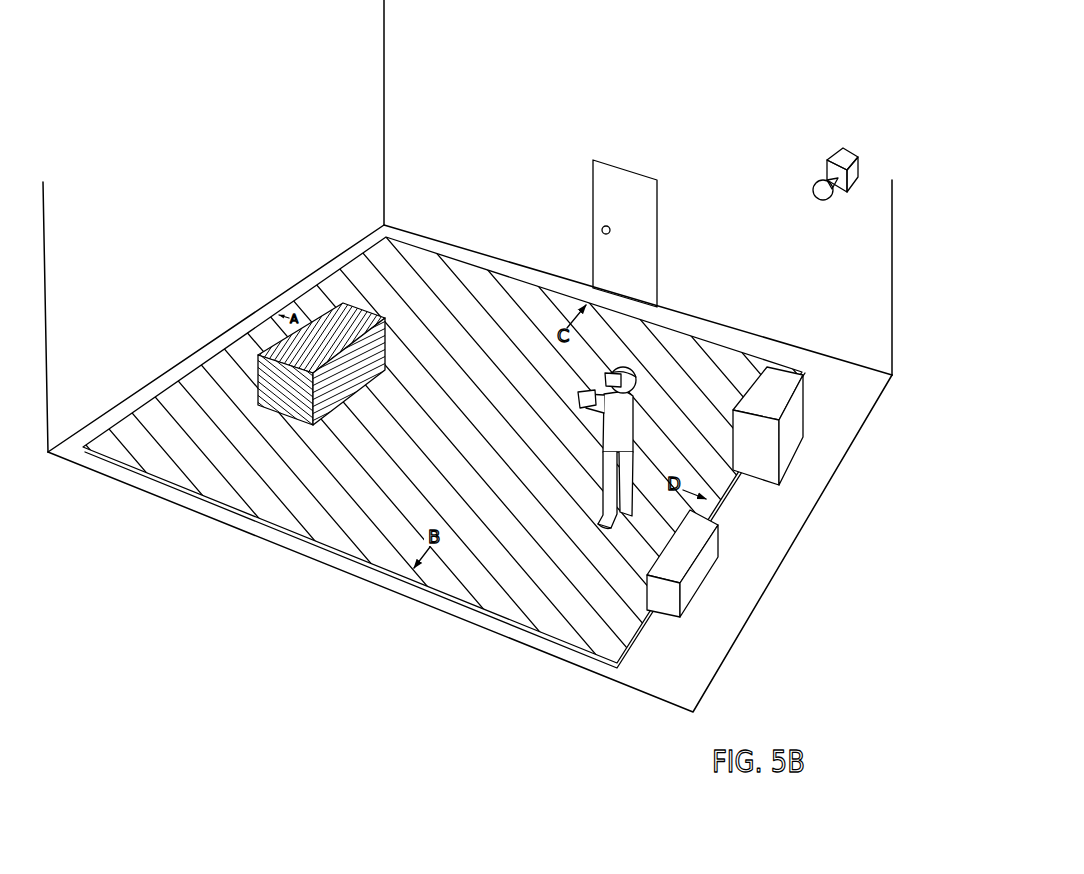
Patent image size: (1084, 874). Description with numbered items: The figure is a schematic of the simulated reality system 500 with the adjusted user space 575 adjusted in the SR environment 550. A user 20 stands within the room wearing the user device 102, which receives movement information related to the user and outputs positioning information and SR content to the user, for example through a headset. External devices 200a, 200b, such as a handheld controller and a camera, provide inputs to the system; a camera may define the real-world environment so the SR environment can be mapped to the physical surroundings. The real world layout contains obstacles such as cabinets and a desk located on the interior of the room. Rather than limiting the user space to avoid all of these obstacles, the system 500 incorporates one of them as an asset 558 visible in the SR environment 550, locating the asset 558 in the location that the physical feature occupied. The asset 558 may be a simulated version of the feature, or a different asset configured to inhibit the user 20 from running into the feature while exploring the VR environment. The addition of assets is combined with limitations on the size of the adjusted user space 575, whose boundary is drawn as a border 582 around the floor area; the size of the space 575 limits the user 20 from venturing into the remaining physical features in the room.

The simulated reality system 500 is at (812, 376).
The SR environment 550 is at (445, 437).
The adjusted user space 575 is at (325, 520).
The border of play area 582 is at (452, 605).
The asset 558 is at (258, 370).
The user 20 is at (602, 406).
The user device 102 is at (608, 370).
The external device 200a is at (577, 390).
The external device 200b is at (843, 162).